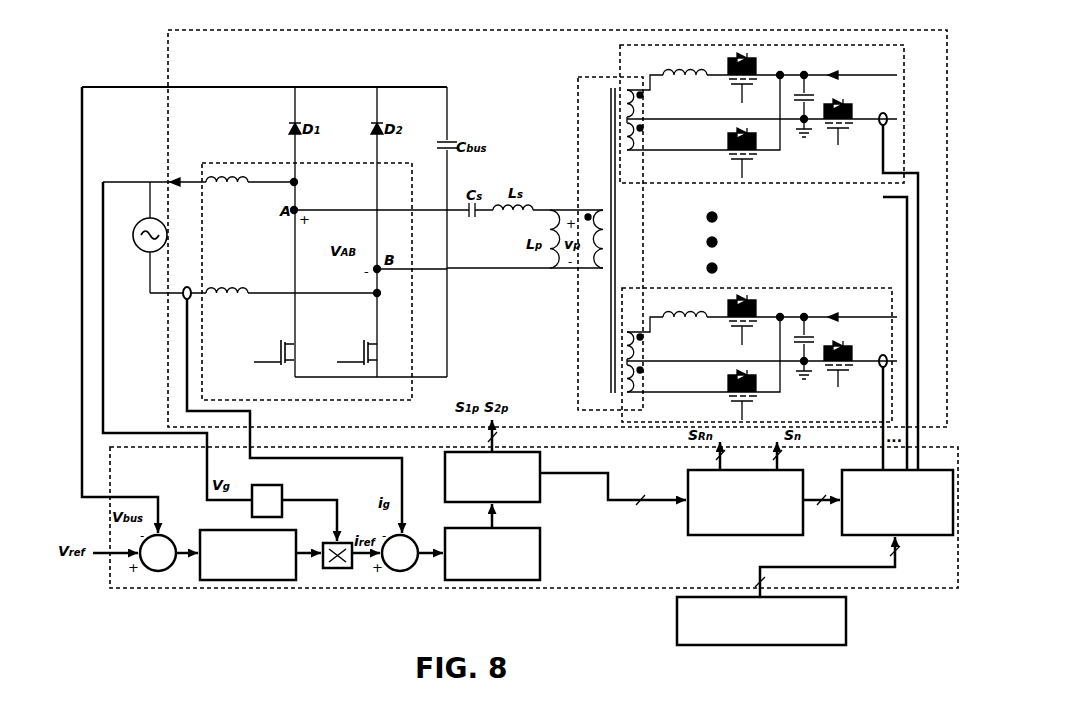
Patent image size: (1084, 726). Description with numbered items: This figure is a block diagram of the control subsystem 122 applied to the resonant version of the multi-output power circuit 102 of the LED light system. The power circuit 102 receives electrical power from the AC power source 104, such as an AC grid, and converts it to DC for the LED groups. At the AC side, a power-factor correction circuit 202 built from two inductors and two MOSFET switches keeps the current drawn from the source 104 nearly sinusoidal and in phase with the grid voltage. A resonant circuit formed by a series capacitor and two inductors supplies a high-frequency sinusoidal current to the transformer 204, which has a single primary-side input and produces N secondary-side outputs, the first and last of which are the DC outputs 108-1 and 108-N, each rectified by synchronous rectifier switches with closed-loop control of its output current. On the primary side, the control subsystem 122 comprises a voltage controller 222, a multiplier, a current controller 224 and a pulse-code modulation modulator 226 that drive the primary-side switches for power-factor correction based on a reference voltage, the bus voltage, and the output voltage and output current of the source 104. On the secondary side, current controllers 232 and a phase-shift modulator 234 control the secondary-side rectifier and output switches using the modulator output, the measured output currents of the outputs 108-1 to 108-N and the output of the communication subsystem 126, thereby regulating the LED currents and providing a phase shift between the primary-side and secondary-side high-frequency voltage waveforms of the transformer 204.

The multi-output power circuit 102 is at (168, 58).
The AC power source 104 is at (141, 255).
The DC output 108-1 is at (783, 45).
The DC output 108-N is at (783, 288).
The control subsystem 122 is at (503, 537).
The communication subsystem 126 is at (677, 632).
The power-factor correction circuit 202 is at (274, 163).
The transformer 204 is at (578, 102).
The voltage controller 222 is at (250, 580).
The current controller 224 is at (525, 580).
The pulse-code modulation modulator 226 is at (535, 502).
The current controllers 232 is at (930, 540).
The phase-shift modulator 234 is at (688, 535).